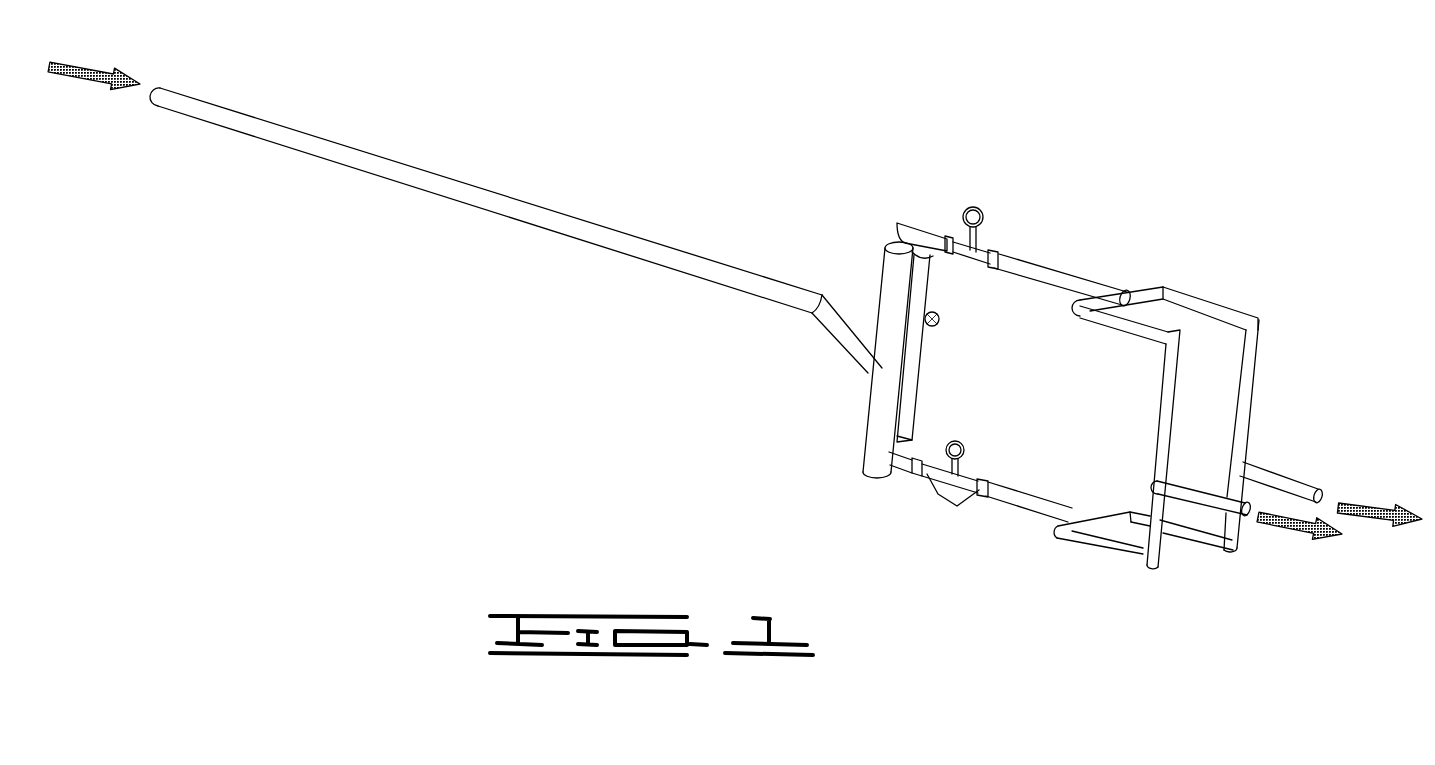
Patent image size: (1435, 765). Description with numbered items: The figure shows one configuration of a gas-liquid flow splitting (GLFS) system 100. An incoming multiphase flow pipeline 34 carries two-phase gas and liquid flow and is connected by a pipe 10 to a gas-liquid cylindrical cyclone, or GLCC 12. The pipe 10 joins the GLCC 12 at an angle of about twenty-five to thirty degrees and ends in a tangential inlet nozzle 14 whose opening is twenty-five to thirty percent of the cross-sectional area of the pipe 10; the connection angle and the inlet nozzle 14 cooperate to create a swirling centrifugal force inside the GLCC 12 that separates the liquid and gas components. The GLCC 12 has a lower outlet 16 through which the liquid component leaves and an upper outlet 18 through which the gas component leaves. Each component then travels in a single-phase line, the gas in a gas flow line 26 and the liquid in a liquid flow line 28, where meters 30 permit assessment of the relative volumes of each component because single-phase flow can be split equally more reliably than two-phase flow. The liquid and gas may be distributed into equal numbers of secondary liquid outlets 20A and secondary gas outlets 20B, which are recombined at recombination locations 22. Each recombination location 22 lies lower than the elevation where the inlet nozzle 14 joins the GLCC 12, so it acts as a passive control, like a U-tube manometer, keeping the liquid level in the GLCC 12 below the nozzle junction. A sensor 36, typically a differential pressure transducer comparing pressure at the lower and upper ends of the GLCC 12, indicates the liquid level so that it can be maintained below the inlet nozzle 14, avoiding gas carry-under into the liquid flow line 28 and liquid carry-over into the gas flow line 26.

The GLFS system 100 is at (1118, 80).
The pipe 10 is at (830, 333).
The GLCC 12 is at (882, 278).
The tangential inlet nozzle 14 is at (870, 372).
The lower outlet 16 is at (888, 458).
The upper outlet 18 is at (895, 234).
The secondary liquid outlets 20A is at (1105, 553).
The secondary gas outlets 20B is at (1232, 306).
The recombination locations 22 is at (1157, 484).
The gas flow line 26 is at (1042, 267).
The liquid flow line 28 is at (1005, 503).
The meters 30 is at (968, 206).
The multiphase flow pipeline 34 is at (408, 188).
The sensor 36 is at (940, 318).